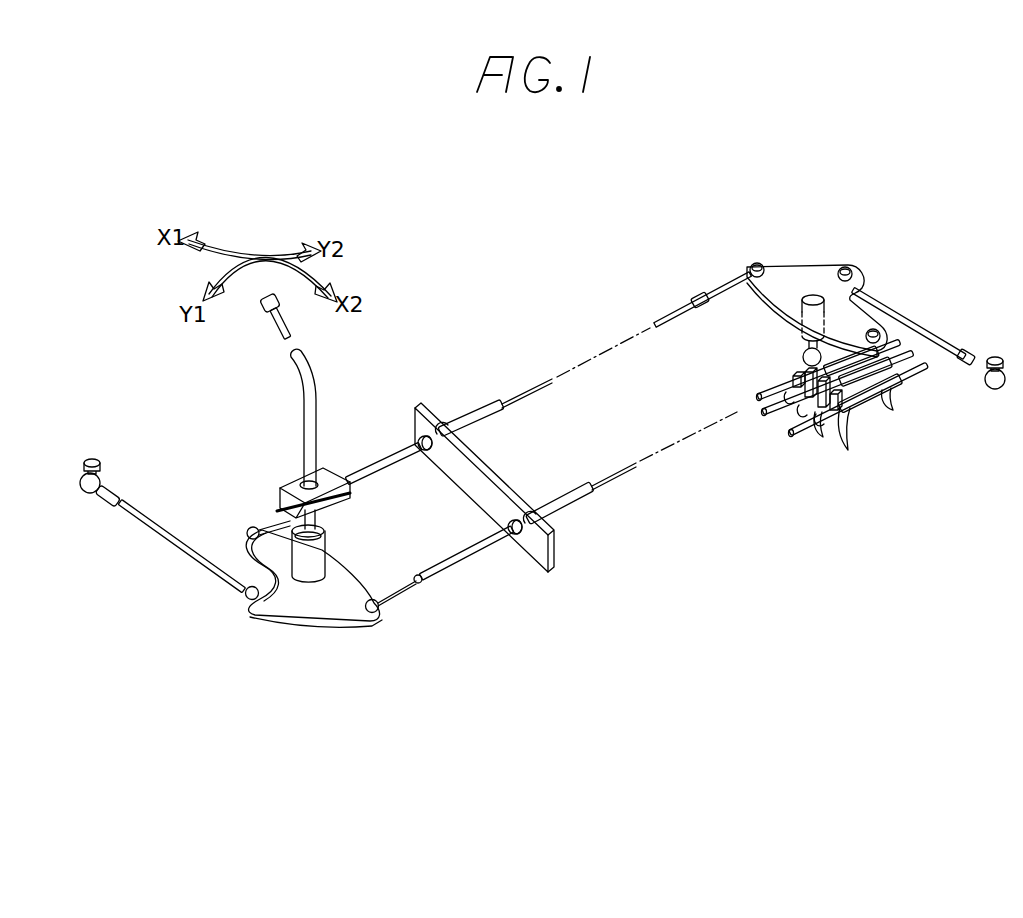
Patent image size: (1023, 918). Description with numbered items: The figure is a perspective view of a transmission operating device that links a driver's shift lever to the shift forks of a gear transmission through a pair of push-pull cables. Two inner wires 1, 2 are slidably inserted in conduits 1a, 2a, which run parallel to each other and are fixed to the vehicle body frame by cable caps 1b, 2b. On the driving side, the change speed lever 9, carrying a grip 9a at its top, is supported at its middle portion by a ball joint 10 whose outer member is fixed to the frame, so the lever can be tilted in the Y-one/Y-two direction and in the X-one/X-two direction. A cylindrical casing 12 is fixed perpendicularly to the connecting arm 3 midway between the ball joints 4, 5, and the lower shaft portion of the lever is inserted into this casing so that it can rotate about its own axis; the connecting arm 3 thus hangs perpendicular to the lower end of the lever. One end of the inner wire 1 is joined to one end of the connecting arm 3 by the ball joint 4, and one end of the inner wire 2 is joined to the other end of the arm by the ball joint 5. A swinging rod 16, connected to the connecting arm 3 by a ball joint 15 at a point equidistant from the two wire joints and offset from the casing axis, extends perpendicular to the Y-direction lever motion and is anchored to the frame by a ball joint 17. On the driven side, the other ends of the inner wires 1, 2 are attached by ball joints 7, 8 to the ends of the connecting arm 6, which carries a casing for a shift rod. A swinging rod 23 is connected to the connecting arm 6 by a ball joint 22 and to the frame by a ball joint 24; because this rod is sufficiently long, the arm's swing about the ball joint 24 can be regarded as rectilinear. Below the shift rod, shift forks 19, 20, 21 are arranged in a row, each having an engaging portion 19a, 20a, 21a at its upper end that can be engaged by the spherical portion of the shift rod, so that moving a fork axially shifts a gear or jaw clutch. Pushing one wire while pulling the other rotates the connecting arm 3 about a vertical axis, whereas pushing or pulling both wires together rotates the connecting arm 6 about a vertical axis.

The inner wire 1 is at (597, 357).
The conduit 1a is at (482, 415).
The cable cap 1b is at (443, 425).
The inner wire 2 is at (672, 445).
The conduit 2a is at (574, 498).
The cable cap 2b is at (546, 526).
The connecting arm 3 is at (343, 581).
The ball joint 4 is at (250, 527).
The ball joint 5 is at (380, 612).
The connecting arm 6 is at (800, 268).
The ball joint 7 is at (757, 262).
The ball joint 8 is at (888, 322).
The change speed lever 9 is at (317, 417).
The grip 9a is at (268, 312).
The ball joint 10 is at (294, 486).
The cylindrical casing 12 is at (320, 553).
The ball joint 15 is at (247, 602).
The swinging rod 16 is at (165, 543).
The ball joint 17 is at (103, 478).
The shift fork 19 is at (789, 437).
The engaging portion 19a is at (840, 406).
The shift fork 20 is at (766, 419).
The engaging portion 20a is at (792, 380).
The shift fork 21 is at (760, 402).
The engaging portion 21a is at (805, 367).
The ball joint 22 is at (848, 266).
The swinging rod 23 is at (945, 348).
The ball joint 24 is at (992, 392).